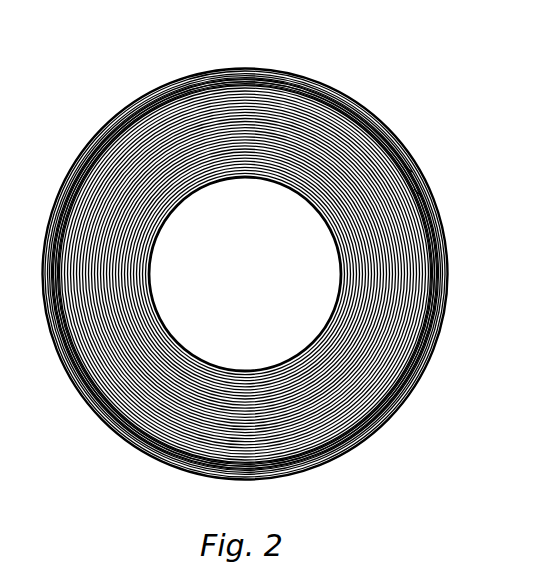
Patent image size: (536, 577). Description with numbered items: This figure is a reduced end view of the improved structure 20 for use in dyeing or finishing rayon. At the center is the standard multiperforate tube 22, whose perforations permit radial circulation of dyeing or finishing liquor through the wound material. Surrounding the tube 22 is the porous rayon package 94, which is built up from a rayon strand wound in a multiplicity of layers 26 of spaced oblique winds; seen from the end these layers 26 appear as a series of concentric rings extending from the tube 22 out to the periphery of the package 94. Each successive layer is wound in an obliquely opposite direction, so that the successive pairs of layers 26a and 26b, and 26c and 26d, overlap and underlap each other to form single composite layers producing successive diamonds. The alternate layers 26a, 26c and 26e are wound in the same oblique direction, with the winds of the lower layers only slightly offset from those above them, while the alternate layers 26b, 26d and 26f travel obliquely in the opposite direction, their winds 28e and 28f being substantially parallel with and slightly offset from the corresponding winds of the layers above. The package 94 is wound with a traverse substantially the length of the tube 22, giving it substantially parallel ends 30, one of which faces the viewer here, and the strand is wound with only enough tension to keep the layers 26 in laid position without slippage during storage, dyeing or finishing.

The structure for use in dyeing or finishing rayon 20 is at (457, 283).
The multiperforate tube 22 is at (333, 253).
The layers 26 is at (172, 75).
The first layer 26a is at (287, 64).
The second layer 26b is at (350, 93).
The third layer 26c is at (375, 120).
The fourth layer 26d is at (388, 140).
The fifth layer 26e is at (400, 160).
The sixth layer 26f is at (413, 182).
The winds of layer 26e 28e is at (405, 163).
The winds of layer 26f 28f is at (412, 186).
The ends 30 is at (343, 443).
The rayon package 94 is at (432, 333).